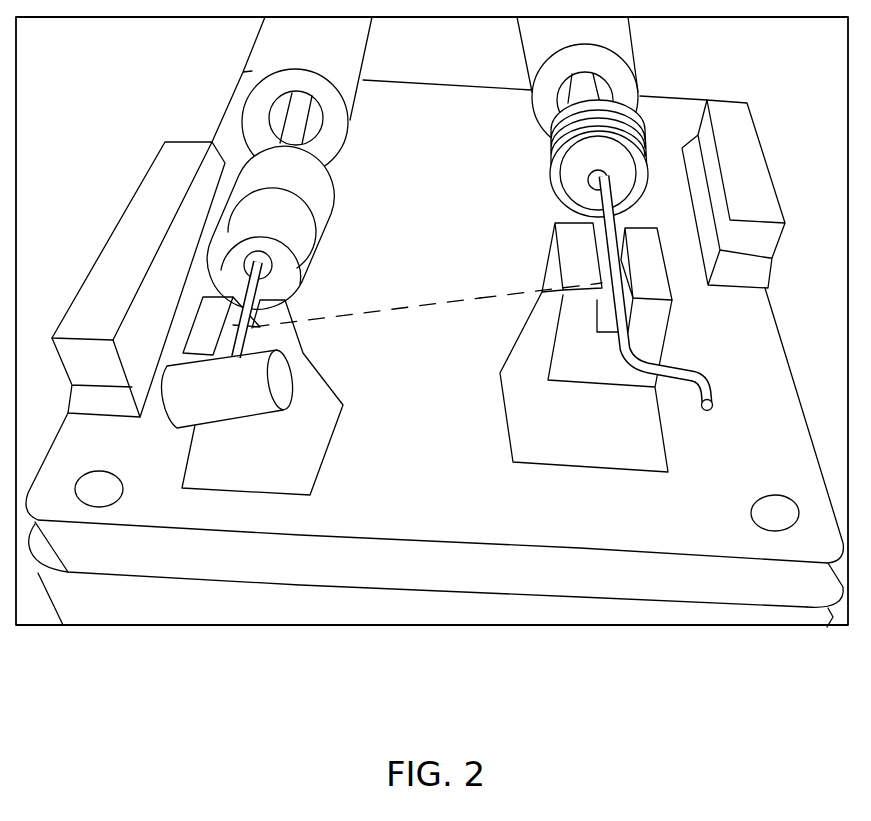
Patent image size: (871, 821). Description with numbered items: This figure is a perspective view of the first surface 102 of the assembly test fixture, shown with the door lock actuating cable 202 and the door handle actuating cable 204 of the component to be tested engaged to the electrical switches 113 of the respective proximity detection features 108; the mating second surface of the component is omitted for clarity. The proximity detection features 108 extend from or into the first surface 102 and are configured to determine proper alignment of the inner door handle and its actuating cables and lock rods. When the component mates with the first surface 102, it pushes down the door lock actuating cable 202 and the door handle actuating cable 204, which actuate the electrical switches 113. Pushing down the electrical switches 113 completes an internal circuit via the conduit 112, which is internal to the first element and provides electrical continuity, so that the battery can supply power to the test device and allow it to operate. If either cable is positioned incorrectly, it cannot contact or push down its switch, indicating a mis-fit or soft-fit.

The first surface 102 is at (447, 293).
The proximity detection features 108 is at (288, 340).
The conduit 112 is at (482, 298).
The electrical switches 113 is at (265, 316).
The door lock actuating cable 202 is at (245, 315).
The door handle actuating cable 204 is at (628, 340).